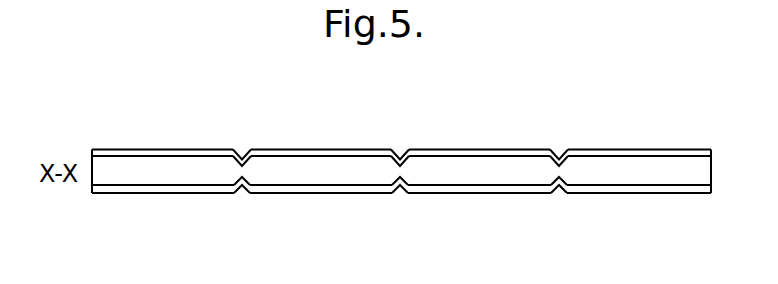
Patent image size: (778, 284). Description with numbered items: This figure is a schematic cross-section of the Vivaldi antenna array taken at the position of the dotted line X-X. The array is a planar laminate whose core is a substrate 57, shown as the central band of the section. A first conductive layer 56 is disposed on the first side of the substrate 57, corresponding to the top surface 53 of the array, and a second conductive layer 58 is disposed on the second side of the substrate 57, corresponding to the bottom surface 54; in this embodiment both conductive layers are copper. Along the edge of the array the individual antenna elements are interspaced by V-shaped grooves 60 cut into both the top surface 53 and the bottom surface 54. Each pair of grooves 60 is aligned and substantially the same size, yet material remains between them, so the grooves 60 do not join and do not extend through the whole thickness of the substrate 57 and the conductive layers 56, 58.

The top surface 53 is at (123, 148).
The bottom surface 54 is at (170, 194).
The first conductive layer 56 is at (668, 150).
The substrate 57 is at (668, 183).
The second conductive layer 58 is at (665, 195).
The V-shaped grooves 60 is at (241, 148).